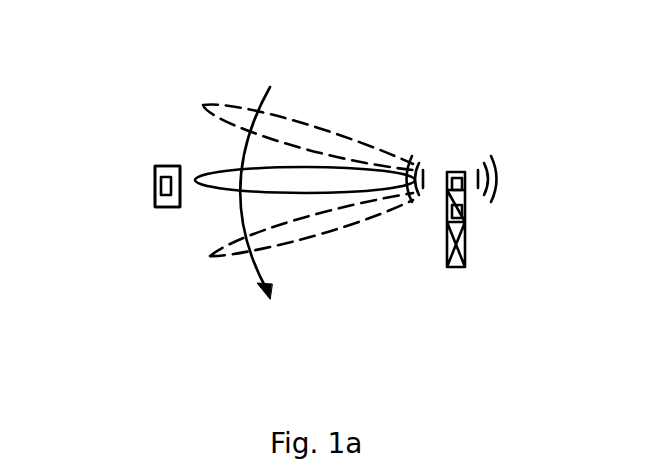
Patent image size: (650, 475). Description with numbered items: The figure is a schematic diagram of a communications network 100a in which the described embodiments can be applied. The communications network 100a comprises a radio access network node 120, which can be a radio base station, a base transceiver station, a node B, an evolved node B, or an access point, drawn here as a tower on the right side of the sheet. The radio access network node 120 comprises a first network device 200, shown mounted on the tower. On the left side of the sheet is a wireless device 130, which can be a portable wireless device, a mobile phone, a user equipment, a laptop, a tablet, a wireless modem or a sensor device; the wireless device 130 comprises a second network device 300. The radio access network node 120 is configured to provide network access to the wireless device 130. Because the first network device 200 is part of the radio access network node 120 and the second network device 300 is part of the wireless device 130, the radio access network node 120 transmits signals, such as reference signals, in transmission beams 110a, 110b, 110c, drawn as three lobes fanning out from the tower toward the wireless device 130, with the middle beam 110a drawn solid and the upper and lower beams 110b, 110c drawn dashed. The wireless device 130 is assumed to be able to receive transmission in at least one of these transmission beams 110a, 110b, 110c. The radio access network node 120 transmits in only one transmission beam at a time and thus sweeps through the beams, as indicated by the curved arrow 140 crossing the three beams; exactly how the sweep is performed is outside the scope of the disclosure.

The communications network 100a is at (460, 53).
The transmission beam 110a is at (205, 178).
The transmission beam 110b is at (310, 118).
The transmission beam 110c is at (318, 242).
The beam sweep 140 is at (262, 105).
The second network device 300 is at (155, 191).
The wireless device 130 is at (167, 207).
The radio access network node 120 is at (466, 250).
The first network device 200 is at (466, 208).